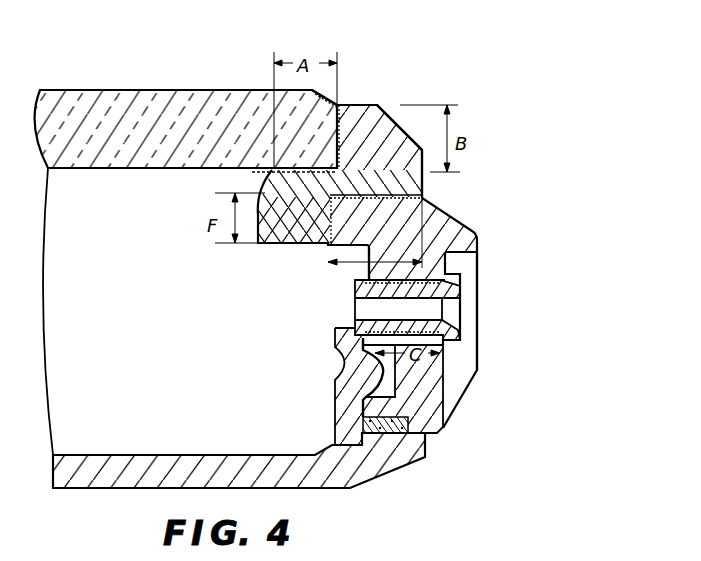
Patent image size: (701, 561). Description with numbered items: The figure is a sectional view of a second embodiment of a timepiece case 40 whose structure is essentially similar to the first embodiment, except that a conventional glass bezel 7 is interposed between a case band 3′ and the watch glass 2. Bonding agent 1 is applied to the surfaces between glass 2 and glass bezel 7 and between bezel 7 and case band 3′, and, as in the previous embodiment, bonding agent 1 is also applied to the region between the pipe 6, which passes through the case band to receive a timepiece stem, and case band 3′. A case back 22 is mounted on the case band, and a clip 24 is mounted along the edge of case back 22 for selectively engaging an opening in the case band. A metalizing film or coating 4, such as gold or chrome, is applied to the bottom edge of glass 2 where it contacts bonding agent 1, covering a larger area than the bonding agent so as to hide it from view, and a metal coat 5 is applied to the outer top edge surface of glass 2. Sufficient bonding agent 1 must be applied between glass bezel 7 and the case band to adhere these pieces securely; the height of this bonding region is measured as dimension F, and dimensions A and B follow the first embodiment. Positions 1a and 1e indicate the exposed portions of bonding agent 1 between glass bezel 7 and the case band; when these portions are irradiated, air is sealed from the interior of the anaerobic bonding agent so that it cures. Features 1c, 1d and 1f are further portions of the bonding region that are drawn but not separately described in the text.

The bonding agent 1 is at (327, 168).
The exposed portion of bonding agent 1a is at (340, 102).
The cavity in frame member 1c is at (447, 270).
The wall of frame member 1d is at (367, 278).
The exposed portion of bonding agent 1e is at (420, 197).
The step of frame member 1f is at (328, 245).
The watch glass 2 is at (82, 110).
The case band 3′ is at (425, 383).
The metalizing film or coating 4 is at (252, 168).
The metal coat 5 is at (330, 93).
The pipe 6 is at (460, 336).
The glass bezel 7 is at (377, 102).
The case back 22 is at (390, 462).
The clip 24 is at (342, 418).
The timepiece case 40 is at (522, 298).